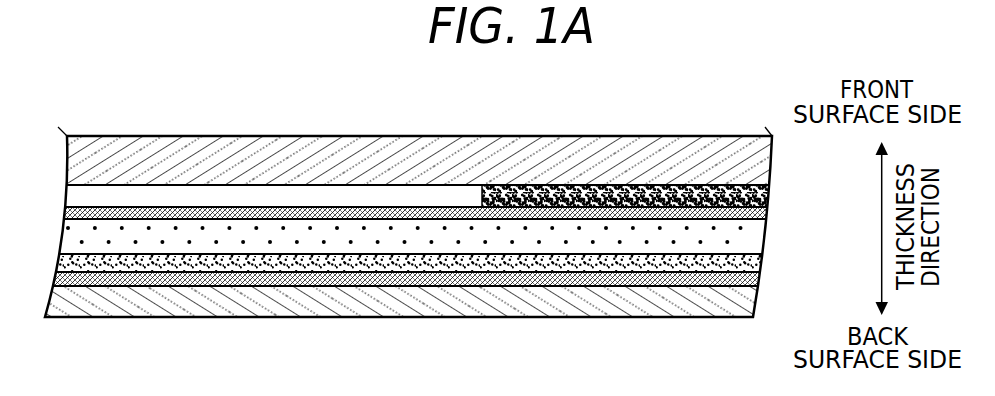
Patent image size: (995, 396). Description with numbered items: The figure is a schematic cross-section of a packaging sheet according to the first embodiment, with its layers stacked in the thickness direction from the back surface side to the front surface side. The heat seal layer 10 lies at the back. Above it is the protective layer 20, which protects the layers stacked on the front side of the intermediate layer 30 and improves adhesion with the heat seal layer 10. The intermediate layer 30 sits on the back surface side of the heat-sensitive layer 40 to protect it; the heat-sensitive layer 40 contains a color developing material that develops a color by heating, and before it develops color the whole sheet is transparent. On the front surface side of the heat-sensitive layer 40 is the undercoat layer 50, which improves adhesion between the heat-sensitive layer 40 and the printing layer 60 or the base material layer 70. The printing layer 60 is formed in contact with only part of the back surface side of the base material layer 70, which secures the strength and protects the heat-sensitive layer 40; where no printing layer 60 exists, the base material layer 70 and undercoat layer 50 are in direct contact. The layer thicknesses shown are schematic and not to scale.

The heat seal layer 10 is at (753, 303).
The protective layer 20 is at (753, 278).
The intermediate layer 30 is at (758, 265).
The heat-sensitive layer 40 is at (755, 237).
The undercoat layer 50 is at (771, 208).
The printing layer 60 is at (771, 198).
The base material layer 70 is at (760, 163).